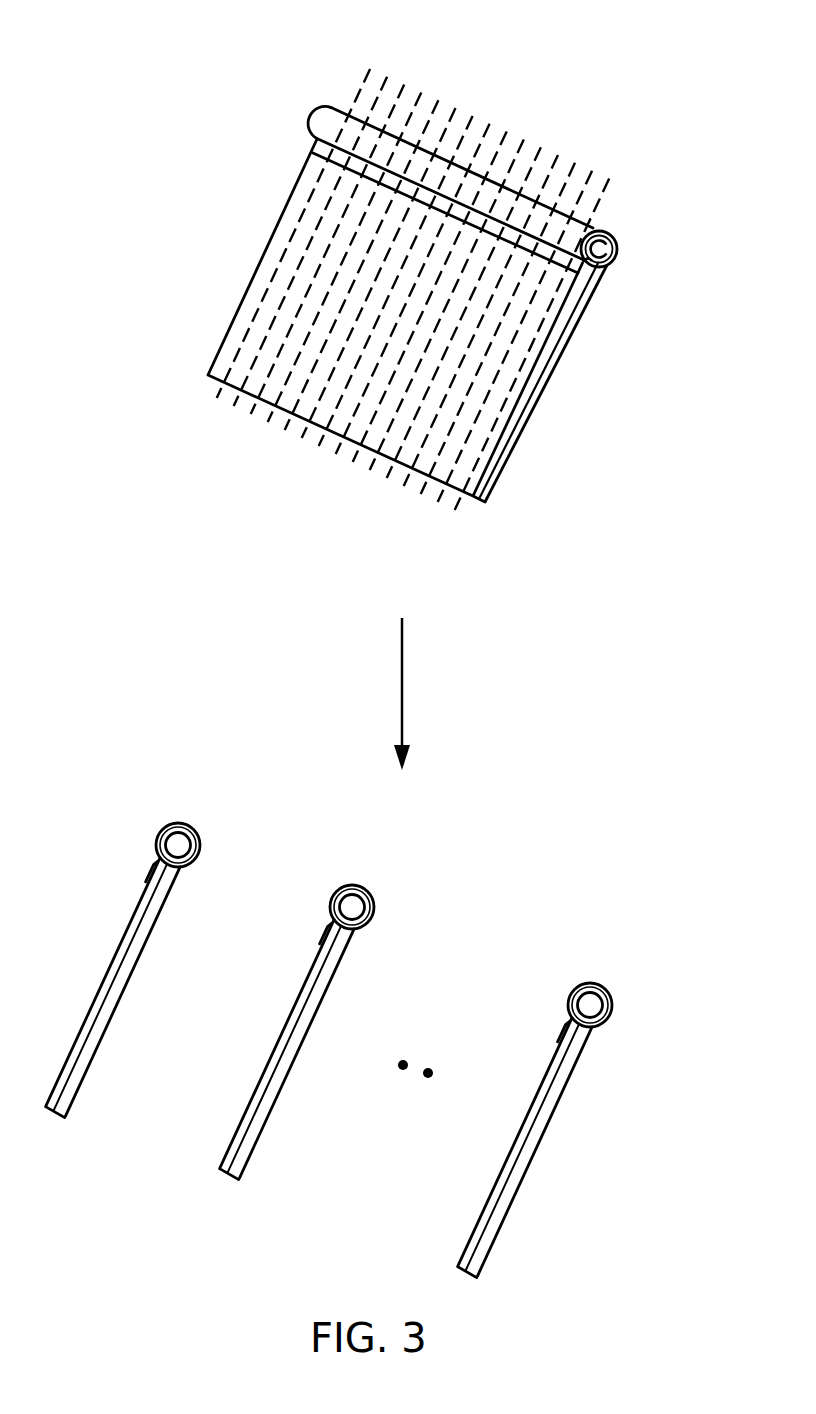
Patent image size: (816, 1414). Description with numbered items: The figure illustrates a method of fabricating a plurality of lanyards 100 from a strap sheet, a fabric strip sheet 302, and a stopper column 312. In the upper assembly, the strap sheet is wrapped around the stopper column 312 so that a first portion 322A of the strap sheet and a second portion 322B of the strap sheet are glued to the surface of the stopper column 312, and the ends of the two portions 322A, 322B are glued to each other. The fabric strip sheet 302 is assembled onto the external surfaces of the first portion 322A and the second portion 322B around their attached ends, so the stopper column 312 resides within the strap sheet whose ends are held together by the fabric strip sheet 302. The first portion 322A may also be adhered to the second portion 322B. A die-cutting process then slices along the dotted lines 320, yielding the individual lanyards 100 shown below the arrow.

The dotted lines 320 is at (488, 125).
The fabric strip sheet 302 is at (613, 230).
The stopper column 312 is at (607, 266).
The first portion of the strap sheet 322A is at (584, 298).
The second portion of the strap sheet 322B is at (558, 331).
The lanyard 100 is at (377, 912).